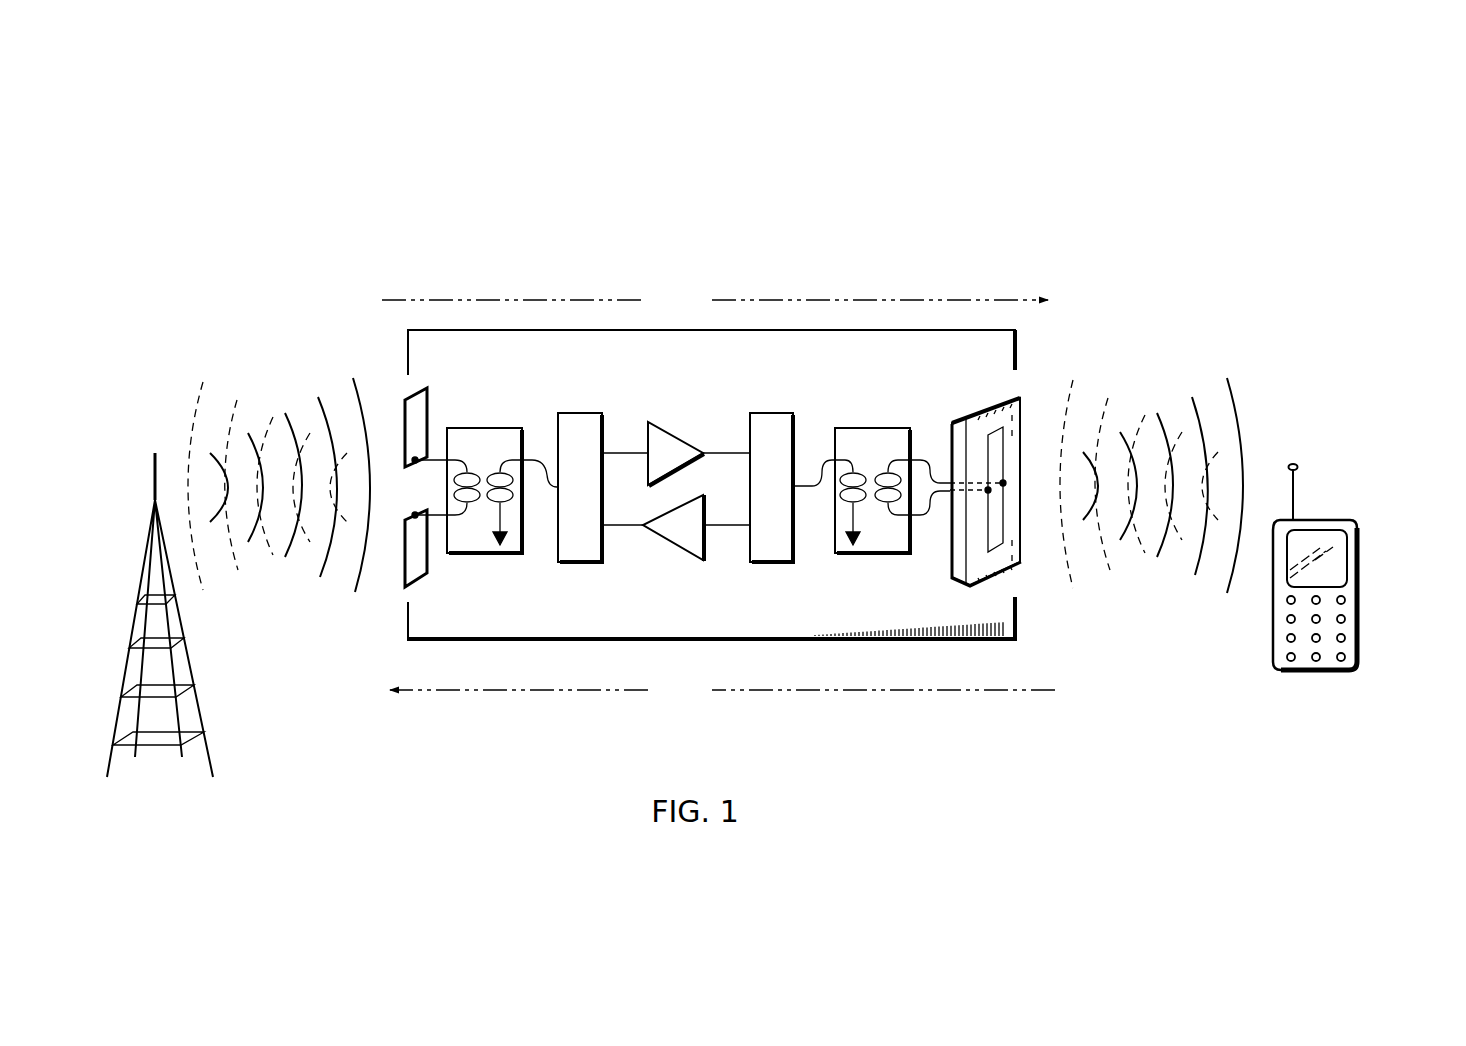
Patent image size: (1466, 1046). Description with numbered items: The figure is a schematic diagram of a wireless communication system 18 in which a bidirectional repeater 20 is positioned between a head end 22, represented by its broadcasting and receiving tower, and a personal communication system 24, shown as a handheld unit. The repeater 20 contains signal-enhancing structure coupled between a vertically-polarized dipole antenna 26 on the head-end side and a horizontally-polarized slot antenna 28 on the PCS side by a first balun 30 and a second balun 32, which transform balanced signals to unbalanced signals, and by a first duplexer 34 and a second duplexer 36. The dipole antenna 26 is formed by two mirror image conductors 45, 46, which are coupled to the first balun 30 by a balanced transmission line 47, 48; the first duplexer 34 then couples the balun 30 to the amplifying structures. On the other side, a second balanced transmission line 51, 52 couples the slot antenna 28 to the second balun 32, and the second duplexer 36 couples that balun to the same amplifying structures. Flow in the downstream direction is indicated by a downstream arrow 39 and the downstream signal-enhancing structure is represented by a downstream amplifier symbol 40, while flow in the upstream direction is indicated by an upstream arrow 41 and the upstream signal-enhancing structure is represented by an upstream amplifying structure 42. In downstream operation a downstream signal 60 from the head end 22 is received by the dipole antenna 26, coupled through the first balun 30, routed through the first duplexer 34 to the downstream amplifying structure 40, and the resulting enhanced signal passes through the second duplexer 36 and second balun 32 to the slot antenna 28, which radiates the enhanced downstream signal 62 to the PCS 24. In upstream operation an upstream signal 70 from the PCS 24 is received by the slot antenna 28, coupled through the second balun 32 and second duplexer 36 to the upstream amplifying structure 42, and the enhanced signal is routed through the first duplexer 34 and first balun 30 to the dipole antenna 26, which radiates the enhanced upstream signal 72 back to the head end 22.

The communication system 18 is at (458, 222).
The bidirectional repeater 20 is at (915, 330).
The head end 22 is at (150, 462).
The personal communication system (PCS) 24 is at (1373, 575).
The vertically-polarized dipole antenna 26 is at (431, 469).
The horizontally-polarized slot antenna 28 is at (1040, 378).
The first balun 30 is at (502, 490).
The second balun 32 is at (872, 491).
The first duplexer 34 is at (580, 473).
The second duplexer 36 is at (771, 473).
The downstream arrow 39 is at (715, 291).
The downstream amplifier symbol 40 is at (676, 454).
The upstream arrow 41 is at (722, 704).
The upstream amplifying structure 42 is at (676, 528).
The mirror image conductor 45 is at (428, 400).
The mirror image conductor 46 is at (420, 572).
The balanced transmission line 47 is at (436, 453).
The balanced transmission line 48 is at (437, 530).
The second balanced transmission line 51 is at (925, 452).
The second balanced transmission line 52 is at (925, 528).
The downstream signal 60 is at (313, 395).
The enhanced downstream signal 62 is at (1185, 392).
The upstream signal 70 is at (1117, 578).
The enhanced upstream signal 72 is at (247, 578).